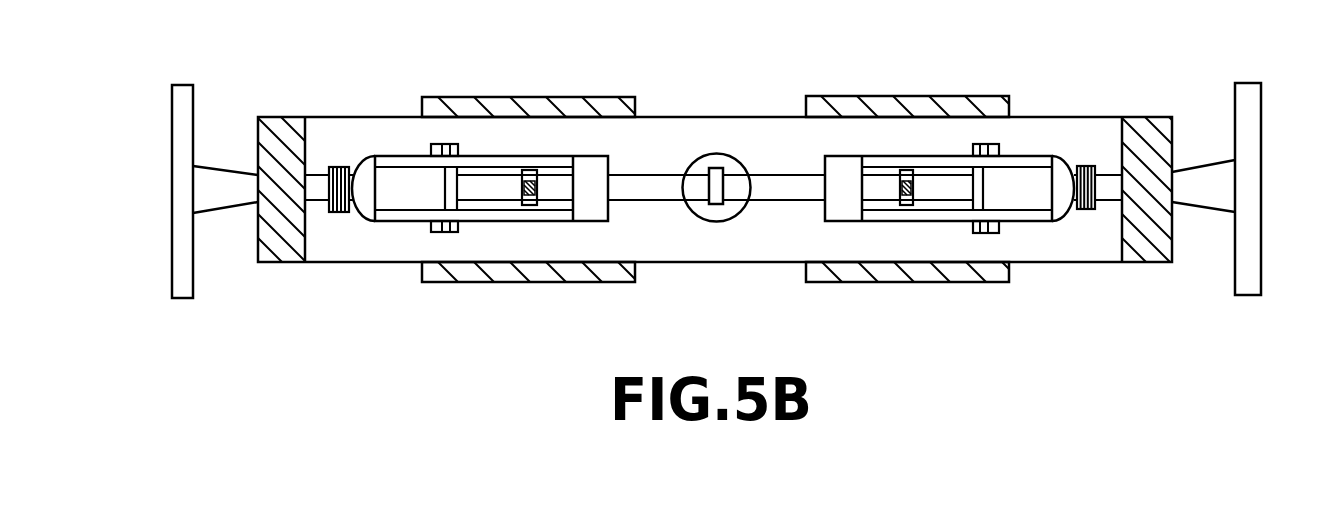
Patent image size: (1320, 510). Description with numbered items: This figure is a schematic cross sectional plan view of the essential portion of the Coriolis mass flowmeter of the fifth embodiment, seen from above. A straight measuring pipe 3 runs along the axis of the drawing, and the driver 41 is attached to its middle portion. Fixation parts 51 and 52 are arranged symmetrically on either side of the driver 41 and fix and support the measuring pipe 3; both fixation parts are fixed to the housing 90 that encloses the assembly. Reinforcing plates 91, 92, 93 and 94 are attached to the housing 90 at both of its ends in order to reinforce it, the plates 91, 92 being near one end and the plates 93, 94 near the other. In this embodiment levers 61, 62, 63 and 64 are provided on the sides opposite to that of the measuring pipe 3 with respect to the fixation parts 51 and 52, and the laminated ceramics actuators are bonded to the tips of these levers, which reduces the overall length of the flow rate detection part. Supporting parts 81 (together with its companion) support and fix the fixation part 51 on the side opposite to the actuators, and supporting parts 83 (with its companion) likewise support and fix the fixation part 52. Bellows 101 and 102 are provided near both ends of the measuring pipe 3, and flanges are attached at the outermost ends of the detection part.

The bellows 102 is at (335, 170).
The reinforcing plate 93 is at (446, 105).
The supporting part 83 is at (457, 145).
The lever 62 is at (542, 160).
The driver 41 is at (712, 164).
The lever 61 is at (888, 159).
The reinforcing plate 91 is at (968, 104).
The supporting part 81 is at (1000, 147).
The bellows 101 is at (1089, 166).
The fixation part 52 is at (397, 203).
The reinforcing plate 94 is at (461, 272).
The lever 64 is at (549, 215).
The housing 90 is at (707, 250).
The measuring pipe 3 is at (791, 192).
The lever 63 is at (932, 214).
The reinforcing plate 92 is at (987, 270).
The fixation part 51 is at (1036, 196).